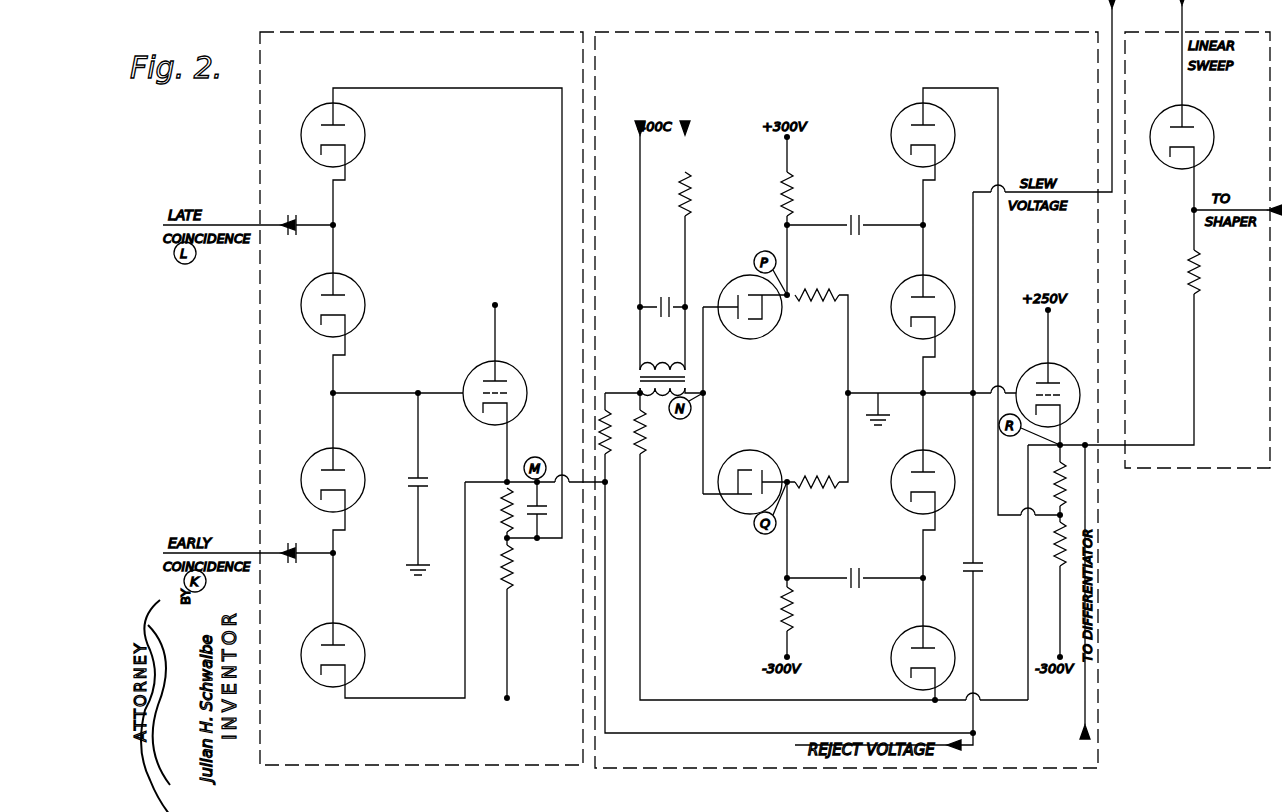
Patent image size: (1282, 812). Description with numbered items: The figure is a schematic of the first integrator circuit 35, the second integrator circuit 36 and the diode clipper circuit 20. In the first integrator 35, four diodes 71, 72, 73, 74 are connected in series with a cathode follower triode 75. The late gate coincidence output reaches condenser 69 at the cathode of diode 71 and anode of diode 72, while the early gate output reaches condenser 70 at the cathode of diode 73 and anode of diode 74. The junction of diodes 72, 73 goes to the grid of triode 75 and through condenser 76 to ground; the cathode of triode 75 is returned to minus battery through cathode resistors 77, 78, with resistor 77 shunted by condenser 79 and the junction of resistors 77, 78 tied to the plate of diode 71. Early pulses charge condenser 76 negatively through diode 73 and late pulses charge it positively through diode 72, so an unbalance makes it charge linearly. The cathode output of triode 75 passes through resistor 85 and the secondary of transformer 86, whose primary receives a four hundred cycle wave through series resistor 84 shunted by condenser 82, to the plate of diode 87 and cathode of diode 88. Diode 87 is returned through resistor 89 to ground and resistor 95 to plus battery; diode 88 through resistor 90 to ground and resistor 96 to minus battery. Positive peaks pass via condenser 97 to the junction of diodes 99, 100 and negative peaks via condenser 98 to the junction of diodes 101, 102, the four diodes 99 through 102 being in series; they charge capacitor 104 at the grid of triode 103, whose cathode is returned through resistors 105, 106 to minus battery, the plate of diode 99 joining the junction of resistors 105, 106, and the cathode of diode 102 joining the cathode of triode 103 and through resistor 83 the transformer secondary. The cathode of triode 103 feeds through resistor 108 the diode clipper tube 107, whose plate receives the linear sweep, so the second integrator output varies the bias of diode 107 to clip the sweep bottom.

The diode clipper circuit 20 is at (1197, 250).
The first integrator circuit 35 is at (421, 398).
The second integrator circuit 36 is at (846, 400).
The condenser 69 is at (290, 219).
The condenser 70 is at (290, 547).
The diode 71 is at (314, 113).
The diode 72 is at (314, 283).
The diode 73 is at (314, 458).
The diode 74 is at (314, 633).
The cathode follower triode 75 is at (472, 372).
The condenser 76 is at (408, 480).
The cathode resistor 77 is at (501, 504).
The cathode resistor 78 is at (501, 558).
The condenser 79 is at (540, 528).
The condenser 82 is at (668, 297).
The resistor 83 is at (642, 450).
The resistor 84 is at (682, 190).
The resistor 85 is at (604, 450).
The transformer 86 is at (636, 375).
The diode 87 is at (742, 287).
The diode 88 is at (742, 462).
The resistor 89 is at (812, 292).
The resistor 90 is at (812, 476).
The resistor 95 is at (781, 190).
The resistor 96 is at (781, 598).
The condenser 97 is at (850, 217).
The condenser 98 is at (850, 568).
The diode 99 is at (900, 116).
The diode 100 is at (905, 290).
The diode 101 is at (904, 465).
The diode 102 is at (904, 642).
The cathode follower triode 103 is at (1032, 370).
The capacitor 104 is at (968, 563).
The resistor 105 is at (1054, 470).
The resistor 106 is at (1056, 565).
The diode clipper tube 107 is at (1160, 112).
The resistor 108 is at (1188, 253).